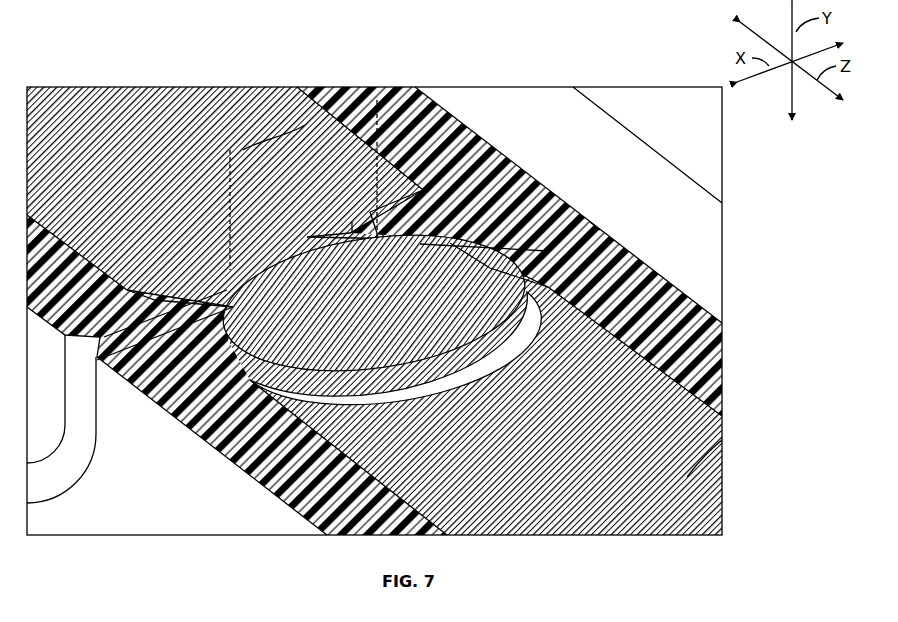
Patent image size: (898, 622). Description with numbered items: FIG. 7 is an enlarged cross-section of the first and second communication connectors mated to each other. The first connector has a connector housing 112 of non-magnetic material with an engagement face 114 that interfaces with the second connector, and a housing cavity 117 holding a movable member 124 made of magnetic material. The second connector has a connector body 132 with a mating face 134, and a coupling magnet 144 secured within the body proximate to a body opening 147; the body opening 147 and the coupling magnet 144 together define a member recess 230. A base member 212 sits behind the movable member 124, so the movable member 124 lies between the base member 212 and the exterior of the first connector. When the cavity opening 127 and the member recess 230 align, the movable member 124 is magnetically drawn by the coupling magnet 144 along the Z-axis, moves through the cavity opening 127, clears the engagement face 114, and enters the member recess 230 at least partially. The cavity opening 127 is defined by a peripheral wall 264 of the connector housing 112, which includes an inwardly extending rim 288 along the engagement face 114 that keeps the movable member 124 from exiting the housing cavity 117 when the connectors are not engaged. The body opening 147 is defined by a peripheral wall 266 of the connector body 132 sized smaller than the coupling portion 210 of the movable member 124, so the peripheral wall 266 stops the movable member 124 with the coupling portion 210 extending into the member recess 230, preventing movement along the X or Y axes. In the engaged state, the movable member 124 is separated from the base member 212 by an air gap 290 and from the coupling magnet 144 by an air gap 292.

The connector housing 112 is at (722, 327).
The engagement face 114 is at (483, 196).
The housing cavity 117 is at (614, 241).
The movable member 124 is at (490, 267).
The cavity opening 127 is at (226, 280).
The connector body 132 is at (588, 143).
The mating face 134 is at (579, 228).
The coupling magnet 144 is at (140, 120).
The body opening 147 is at (306, 126).
The coupling portion 210 is at (310, 243).
The base member 212 is at (722, 440).
The member recess 230 is at (246, 258).
The peripheral wall 264 is at (228, 308).
The peripheral wall 266 is at (352, 232).
The inwardly extending rim 288 is at (440, 241).
The air gap 290 is at (408, 372).
The air gap 292 is at (224, 257).